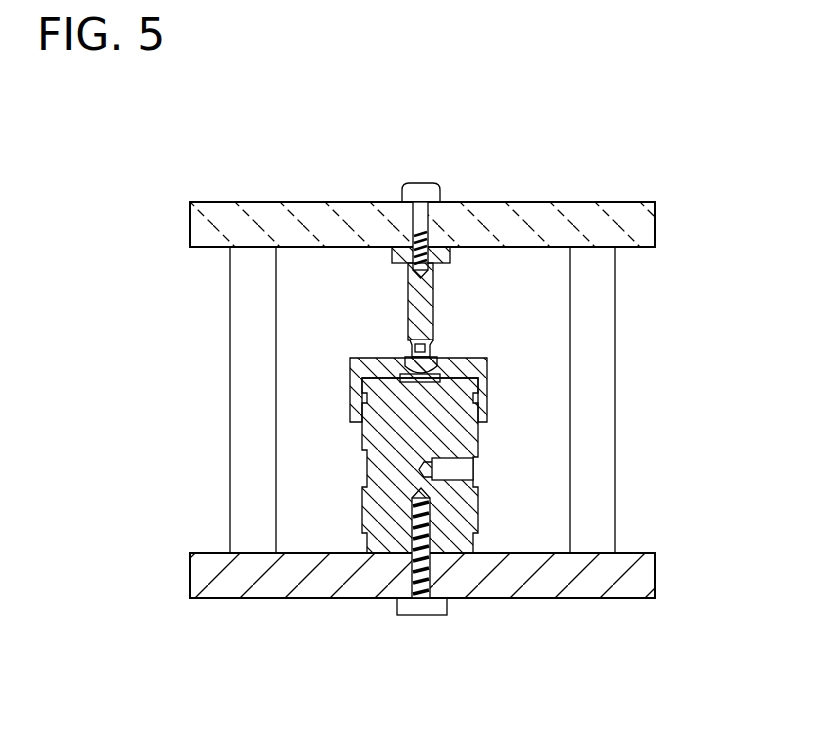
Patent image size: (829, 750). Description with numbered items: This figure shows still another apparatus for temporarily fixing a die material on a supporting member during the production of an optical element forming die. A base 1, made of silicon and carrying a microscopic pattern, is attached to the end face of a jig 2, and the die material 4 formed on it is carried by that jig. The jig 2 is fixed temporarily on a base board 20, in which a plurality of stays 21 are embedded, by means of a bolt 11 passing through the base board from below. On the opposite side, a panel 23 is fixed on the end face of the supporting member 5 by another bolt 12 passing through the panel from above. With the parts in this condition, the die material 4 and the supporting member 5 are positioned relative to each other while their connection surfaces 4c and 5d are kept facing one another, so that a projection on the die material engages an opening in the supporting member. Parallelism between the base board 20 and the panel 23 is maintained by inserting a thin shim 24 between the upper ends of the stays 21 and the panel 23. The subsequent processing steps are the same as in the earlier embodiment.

The base 1 is at (413, 383).
The jig 2 is at (470, 440).
The die material 4 is at (487, 383).
The connection surface 4c is at (410, 342).
The supporting member 5 is at (425, 287).
The connection surface 5d is at (435, 360).
The bolt 11 is at (410, 618).
The bolt 12 is at (420, 183).
The base board 20 is at (263, 588).
The stay 21 is at (240, 458).
The panel 23 is at (330, 200).
The shim 24 is at (210, 252).